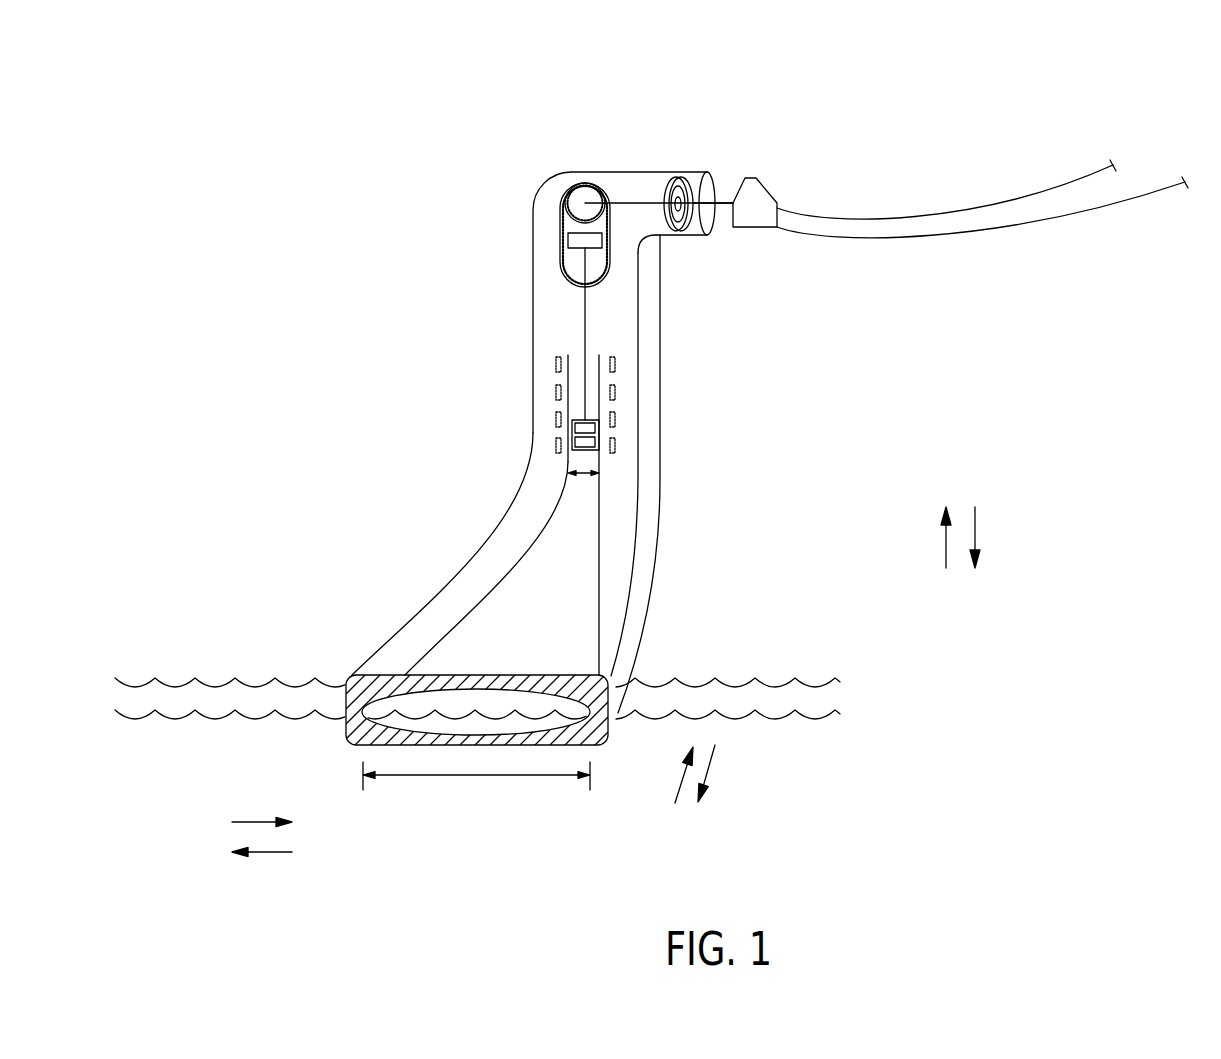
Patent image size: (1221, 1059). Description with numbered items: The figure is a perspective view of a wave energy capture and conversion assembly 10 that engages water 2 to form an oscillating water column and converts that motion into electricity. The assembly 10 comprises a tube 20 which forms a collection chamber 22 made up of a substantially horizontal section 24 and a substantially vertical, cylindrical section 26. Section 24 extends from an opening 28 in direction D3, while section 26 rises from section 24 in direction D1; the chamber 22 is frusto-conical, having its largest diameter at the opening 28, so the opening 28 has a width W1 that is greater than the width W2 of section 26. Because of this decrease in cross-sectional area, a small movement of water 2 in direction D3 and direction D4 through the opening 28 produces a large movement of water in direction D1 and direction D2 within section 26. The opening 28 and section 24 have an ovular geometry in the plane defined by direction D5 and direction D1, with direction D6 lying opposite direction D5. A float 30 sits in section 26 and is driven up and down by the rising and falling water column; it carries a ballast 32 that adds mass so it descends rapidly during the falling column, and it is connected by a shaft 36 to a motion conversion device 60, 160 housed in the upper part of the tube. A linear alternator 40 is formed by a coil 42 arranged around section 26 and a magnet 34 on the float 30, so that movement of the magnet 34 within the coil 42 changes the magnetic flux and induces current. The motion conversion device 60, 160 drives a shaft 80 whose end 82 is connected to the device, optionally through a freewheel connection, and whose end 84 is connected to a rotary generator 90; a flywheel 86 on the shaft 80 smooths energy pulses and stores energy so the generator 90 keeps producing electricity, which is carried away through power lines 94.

The water 2 is at (217, 702).
The wave energy capture and conversion assembly 10 is at (372, 138).
The tube 20 is at (472, 557).
The collection chamber 22 is at (470, 613).
The section 24 is at (520, 657).
The section 26 is at (570, 407).
The opening 28 is at (480, 715).
The float 30 is at (598, 447).
The ballast 32 is at (568, 447).
The magnet 34 is at (568, 430).
The shaft 36 is at (577, 318).
The linear alternator 40 is at (680, 370).
The coil 42 is at (615, 417).
The motion conversion device 60 is at (529, 201).
The motion conversion device 160 is at (529, 201).
The shaft 80 is at (643, 205).
The end 82 is at (585, 203).
The end 84 is at (727, 207).
The flywheel 86 is at (687, 185).
The generator 90 is at (752, 197).
The power lines 94 is at (1108, 213).
The width W1 is at (470, 778).
The width W2 is at (582, 478).
The direction D1 is at (945, 540).
The direction D2 is at (978, 540).
The direction D3 is at (678, 780).
The direction D4 is at (722, 757).
The direction D5 is at (258, 820).
The direction D6 is at (262, 853).